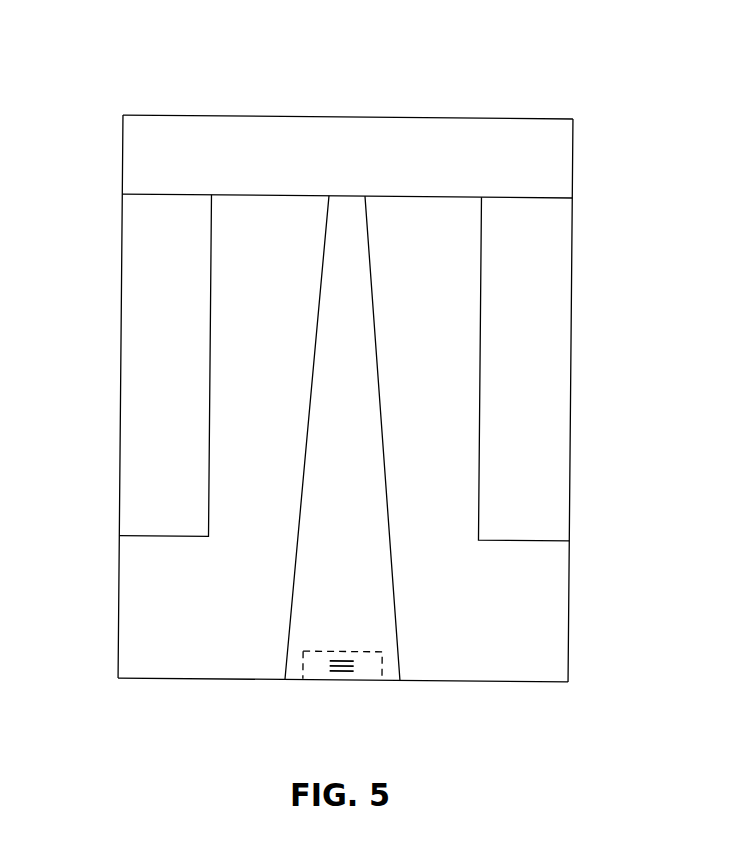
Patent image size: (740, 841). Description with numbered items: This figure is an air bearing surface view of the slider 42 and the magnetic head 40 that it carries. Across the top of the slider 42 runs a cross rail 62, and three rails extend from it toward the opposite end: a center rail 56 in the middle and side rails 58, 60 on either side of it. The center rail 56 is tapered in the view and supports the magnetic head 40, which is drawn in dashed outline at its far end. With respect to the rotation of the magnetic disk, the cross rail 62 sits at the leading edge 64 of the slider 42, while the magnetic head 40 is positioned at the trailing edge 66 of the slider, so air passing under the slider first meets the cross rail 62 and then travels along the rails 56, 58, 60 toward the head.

The magnetic head 40 is at (320, 673).
The slider 42 is at (117, 626).
The center rail 56 is at (330, 312).
The side rail 58 is at (138, 273).
The side rail 60 is at (555, 280).
The cross rail 62 is at (266, 130).
The leading edge 64 is at (450, 119).
The trailing edge 66 is at (462, 681).